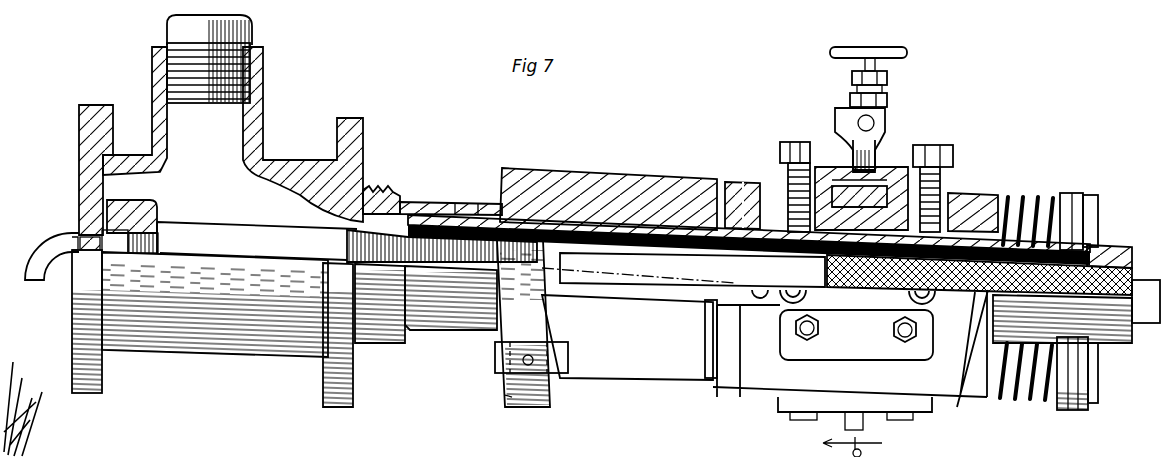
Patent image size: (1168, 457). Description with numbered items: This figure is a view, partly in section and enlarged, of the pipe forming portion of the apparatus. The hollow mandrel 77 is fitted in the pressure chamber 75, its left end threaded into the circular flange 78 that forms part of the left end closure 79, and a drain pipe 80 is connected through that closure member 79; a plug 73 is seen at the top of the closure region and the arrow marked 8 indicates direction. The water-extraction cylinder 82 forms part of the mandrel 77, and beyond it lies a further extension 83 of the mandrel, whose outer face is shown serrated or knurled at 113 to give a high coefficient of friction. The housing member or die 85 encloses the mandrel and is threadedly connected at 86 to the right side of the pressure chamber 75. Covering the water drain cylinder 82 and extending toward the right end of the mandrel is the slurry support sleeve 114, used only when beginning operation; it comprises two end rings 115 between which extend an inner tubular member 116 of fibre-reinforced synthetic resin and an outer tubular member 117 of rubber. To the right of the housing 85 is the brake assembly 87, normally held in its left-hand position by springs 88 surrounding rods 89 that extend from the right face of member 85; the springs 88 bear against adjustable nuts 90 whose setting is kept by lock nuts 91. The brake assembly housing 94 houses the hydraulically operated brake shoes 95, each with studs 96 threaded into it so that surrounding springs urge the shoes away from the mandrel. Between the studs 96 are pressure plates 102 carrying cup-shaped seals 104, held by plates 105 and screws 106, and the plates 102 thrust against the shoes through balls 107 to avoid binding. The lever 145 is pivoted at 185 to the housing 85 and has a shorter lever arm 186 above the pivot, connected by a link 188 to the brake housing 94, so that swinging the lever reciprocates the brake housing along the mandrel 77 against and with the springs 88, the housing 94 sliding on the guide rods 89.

The screw plug 73 is at (252, 38).
The left end closure 79 is at (79, 133).
The mandrel 77 is at (207, 232).
The circular flange 78 is at (152, 200).
The drain pipe 80 is at (40, 287).
The pressure chamber 75 is at (205, 352).
The inner tubular member 116 is at (437, 238).
The water-extraction cylinder 82 is at (461, 258).
The threaded connection 86 is at (380, 188).
The end rings 115 is at (420, 213).
The outer tubular member 117 is at (478, 213).
The slurry support sleeve 114 is at (525, 220).
The mandrel extension 83 is at (590, 260).
The housing member or die 85 is at (575, 180).
The guide rods 89 is at (720, 182).
The studs 96 is at (783, 172).
The pressure plates 102 is at (796, 178).
The cup-shaped seals 104 is at (833, 196).
The screws 106 is at (842, 196).
The plates 105 is at (870, 165).
The valve 8 is at (907, 129).
The brake assembly 87 is at (968, 195).
The springs 88 is at (1040, 195).
The adjustable nuts 90 is at (1070, 195).
The lock nuts 91 is at (1100, 197).
The balls 107 is at (942, 284).
The serrated or knurled surface 113 is at (973, 357).
The brake assembly housing 94 is at (757, 373).
The brake shoes 95 is at (683, 270).
The link 188 is at (662, 293).
The shorter lever arm 186 is at (547, 312).
The pivot 185 is at (520, 363).
The lever 145 is at (513, 397).